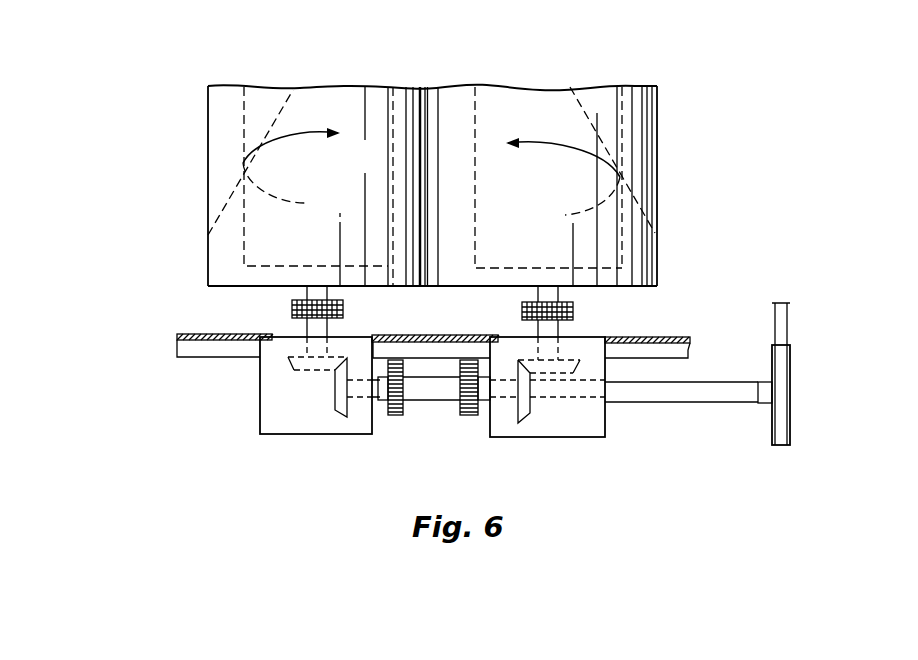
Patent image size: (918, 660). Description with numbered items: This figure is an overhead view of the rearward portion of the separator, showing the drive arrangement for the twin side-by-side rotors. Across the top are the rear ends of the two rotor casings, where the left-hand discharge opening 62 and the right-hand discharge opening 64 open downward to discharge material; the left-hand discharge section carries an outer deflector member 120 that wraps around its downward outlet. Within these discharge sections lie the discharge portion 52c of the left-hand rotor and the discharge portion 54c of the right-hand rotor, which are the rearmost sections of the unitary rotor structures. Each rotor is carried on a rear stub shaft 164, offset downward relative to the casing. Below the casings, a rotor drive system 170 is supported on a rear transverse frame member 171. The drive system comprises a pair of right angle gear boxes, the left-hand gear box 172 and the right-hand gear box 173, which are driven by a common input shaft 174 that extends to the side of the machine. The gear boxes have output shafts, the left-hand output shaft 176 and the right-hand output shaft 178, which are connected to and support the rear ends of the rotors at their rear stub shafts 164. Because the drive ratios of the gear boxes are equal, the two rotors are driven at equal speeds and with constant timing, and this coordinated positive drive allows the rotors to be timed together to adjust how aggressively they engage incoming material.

The outer deflector member 120 is at (280, 112).
The discharge portion 52c is at (232, 148).
The discharge opening 62 is at (186, 191).
The discharge portion 54c is at (630, 137).
The discharge opening 64 is at (688, 207).
The rear stub shaft 164 is at (307, 291).
The output shaft 176 is at (327, 330).
The output shaft 178 is at (538, 333).
The rear transverse frame member 171 is at (210, 357).
The right angle gear box 172 is at (313, 442).
The right angle gear box 173 is at (538, 445).
The rotor drive system 170 is at (585, 448).
The common input shaft 174 is at (658, 403).